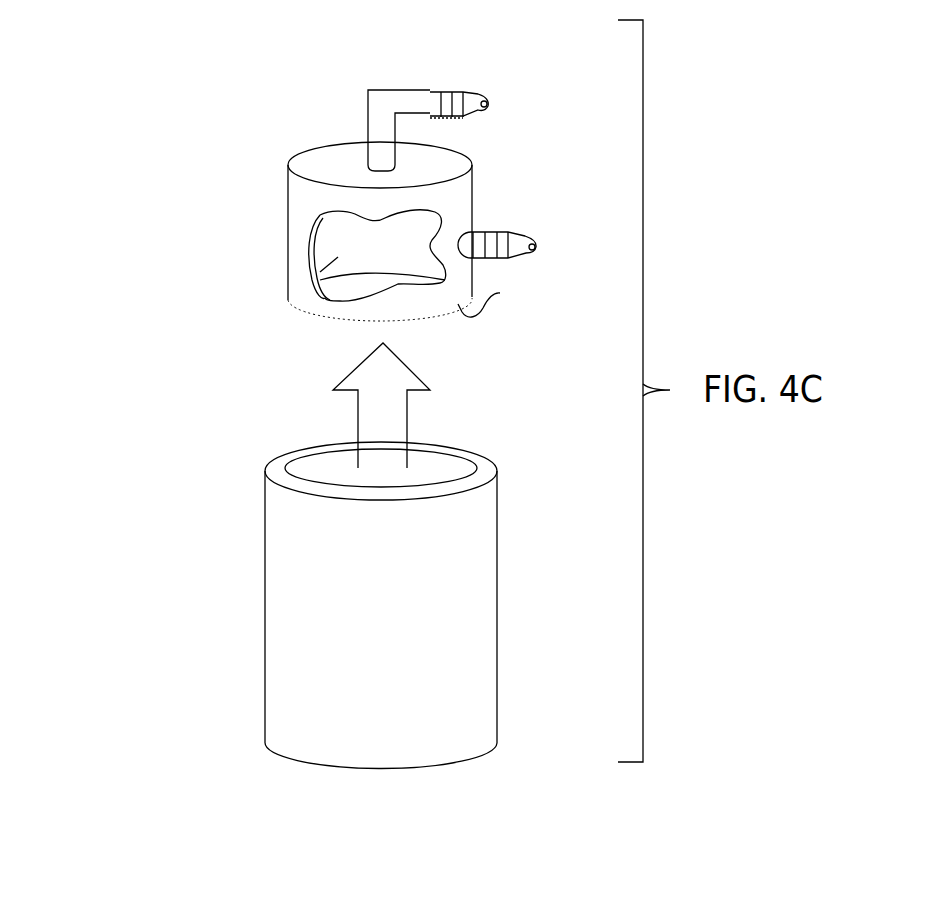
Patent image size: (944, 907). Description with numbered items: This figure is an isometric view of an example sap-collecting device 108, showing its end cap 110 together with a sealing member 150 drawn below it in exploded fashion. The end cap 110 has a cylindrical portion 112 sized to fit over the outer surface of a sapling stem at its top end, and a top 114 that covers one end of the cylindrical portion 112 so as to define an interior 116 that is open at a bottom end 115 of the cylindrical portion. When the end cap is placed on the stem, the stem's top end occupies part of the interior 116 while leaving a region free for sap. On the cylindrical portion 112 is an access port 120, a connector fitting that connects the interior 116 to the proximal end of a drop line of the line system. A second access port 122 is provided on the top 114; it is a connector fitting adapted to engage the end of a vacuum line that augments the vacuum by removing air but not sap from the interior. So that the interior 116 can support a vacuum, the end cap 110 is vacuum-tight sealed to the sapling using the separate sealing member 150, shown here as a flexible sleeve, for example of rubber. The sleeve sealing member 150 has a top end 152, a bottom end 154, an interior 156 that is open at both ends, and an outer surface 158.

The sap-collecting device 108 is at (166, 134).
The end cap 110 is at (334, 116).
The top 114 is at (317, 163).
The cylindrical portion 112 is at (307, 225).
The interior 116 is at (310, 272).
The second access port 122 is at (450, 92).
The access port 120 is at (493, 232).
The bottom end 115 is at (504, 304).
The sealing member 150 is at (266, 412).
The top end 152 is at (480, 462).
The interior 156 is at (315, 470).
The outer surface 158 is at (455, 543).
The bottom end 154 is at (277, 750).